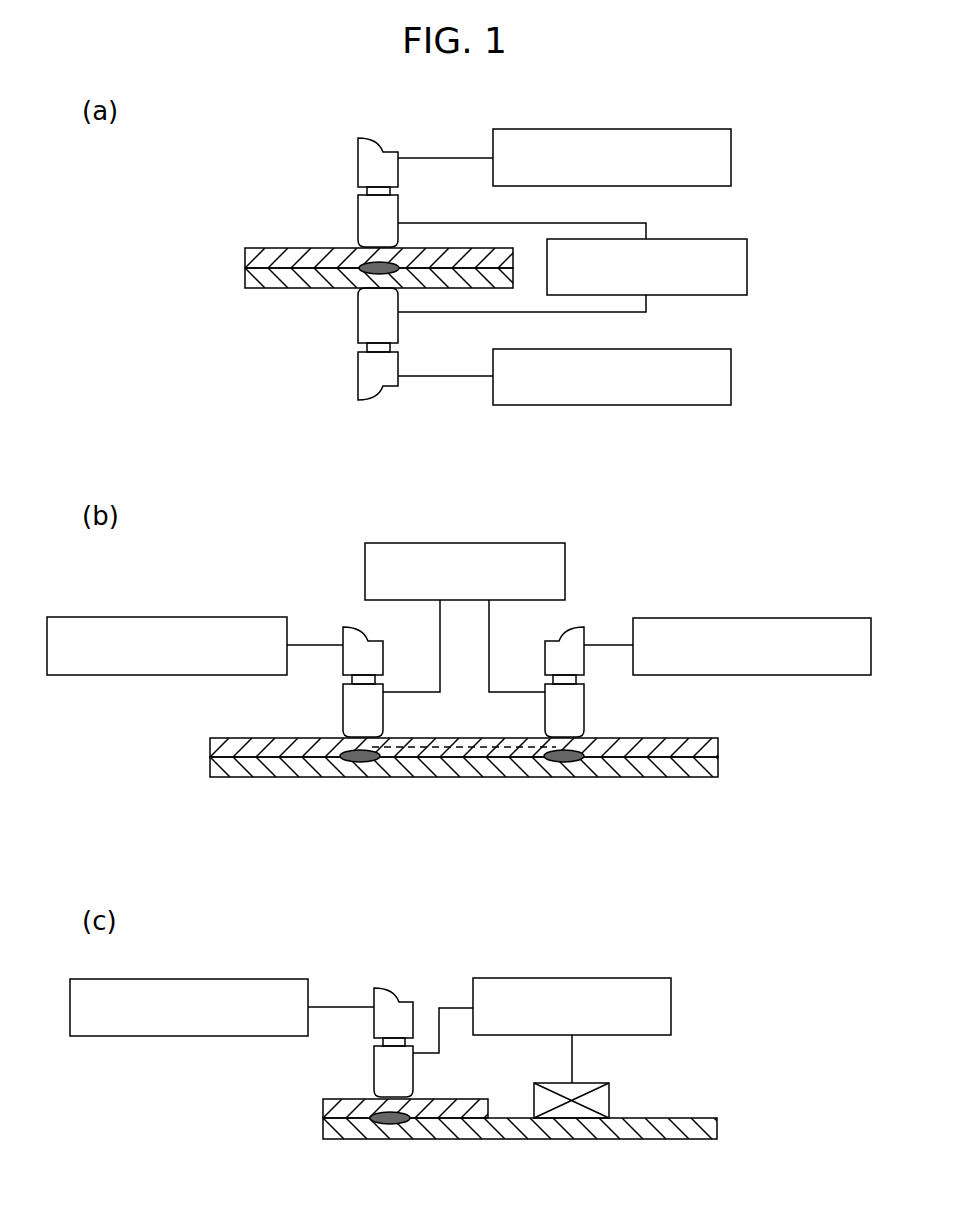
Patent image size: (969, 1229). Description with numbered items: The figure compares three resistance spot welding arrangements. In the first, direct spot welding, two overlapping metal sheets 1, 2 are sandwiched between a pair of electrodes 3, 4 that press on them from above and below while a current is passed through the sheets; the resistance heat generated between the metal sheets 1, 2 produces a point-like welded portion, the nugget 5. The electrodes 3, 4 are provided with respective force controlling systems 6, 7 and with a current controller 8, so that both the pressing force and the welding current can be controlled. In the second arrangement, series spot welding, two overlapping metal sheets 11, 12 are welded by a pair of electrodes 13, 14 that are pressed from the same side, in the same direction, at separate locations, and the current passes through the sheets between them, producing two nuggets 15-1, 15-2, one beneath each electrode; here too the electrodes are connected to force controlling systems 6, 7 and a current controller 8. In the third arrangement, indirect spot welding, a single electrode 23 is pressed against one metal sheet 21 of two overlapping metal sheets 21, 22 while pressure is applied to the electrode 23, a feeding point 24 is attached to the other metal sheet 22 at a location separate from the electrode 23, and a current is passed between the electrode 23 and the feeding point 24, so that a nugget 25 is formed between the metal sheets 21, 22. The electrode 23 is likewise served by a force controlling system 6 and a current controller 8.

The metal sheet 1 is at (288, 253).
The metal sheet 2 is at (283, 287).
The electrode 3 is at (358, 215).
The electrode 4 is at (358, 327).
The nugget 5 is at (357, 277).
The force controlling system 6 is at (679, 127).
The force controlling system 7 is at (679, 347).
The current controller 8 is at (717, 237).
The metal sheet 11 is at (245, 740).
The metal sheet 12 is at (243, 776).
The electrode 13 is at (383, 710).
The electrode 14 is at (584, 710).
The nugget 15-1 is at (357, 765).
The nugget 15-2 is at (562, 765).
The metal sheet 21 is at (345, 1100).
The metal sheet 22 is at (345, 1140).
The electrode 23 is at (413, 1072).
The feeding point 24 is at (600, 1083).
The nugget 25 is at (388, 1127).